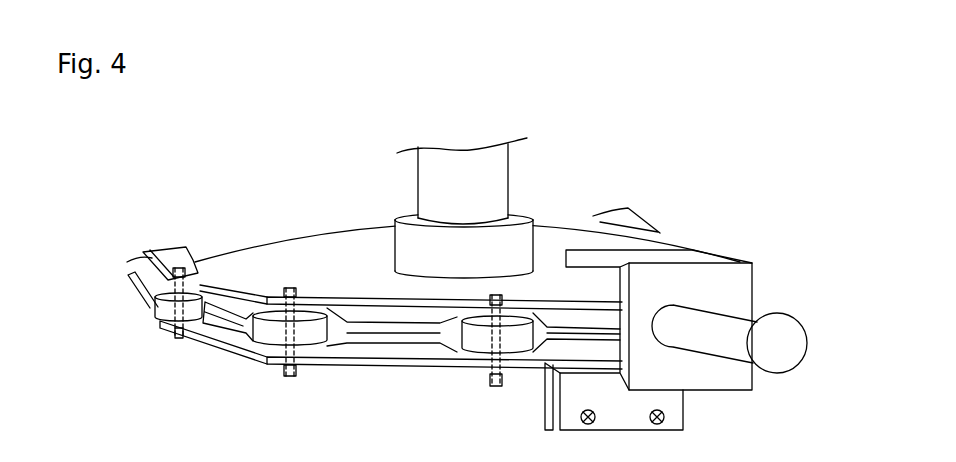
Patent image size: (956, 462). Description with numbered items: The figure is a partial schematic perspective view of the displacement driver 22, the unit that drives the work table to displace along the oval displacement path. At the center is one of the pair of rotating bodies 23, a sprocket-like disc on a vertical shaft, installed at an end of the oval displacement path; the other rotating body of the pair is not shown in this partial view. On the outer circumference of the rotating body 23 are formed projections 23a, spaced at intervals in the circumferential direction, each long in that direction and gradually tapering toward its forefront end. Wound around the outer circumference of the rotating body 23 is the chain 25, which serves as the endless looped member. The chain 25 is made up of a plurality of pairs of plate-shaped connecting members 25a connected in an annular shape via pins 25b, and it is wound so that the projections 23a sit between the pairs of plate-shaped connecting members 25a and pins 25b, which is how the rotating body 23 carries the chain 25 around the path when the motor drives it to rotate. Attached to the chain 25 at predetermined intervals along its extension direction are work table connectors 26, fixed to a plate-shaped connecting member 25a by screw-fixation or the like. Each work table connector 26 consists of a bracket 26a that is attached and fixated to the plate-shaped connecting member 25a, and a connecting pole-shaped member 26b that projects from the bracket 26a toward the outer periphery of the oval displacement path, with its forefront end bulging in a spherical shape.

The displacement driver 22 is at (350, 182).
The rotating body 23 is at (263, 240).
The projection 23a is at (216, 325).
The chain 25 is at (133, 291).
The plate-shaped connecting member 25a is at (164, 252).
The pin 25b is at (194, 260).
The work table connector 26 is at (724, 246).
The bracket 26a is at (755, 284).
The connecting pole-shaped member 26b is at (781, 372).